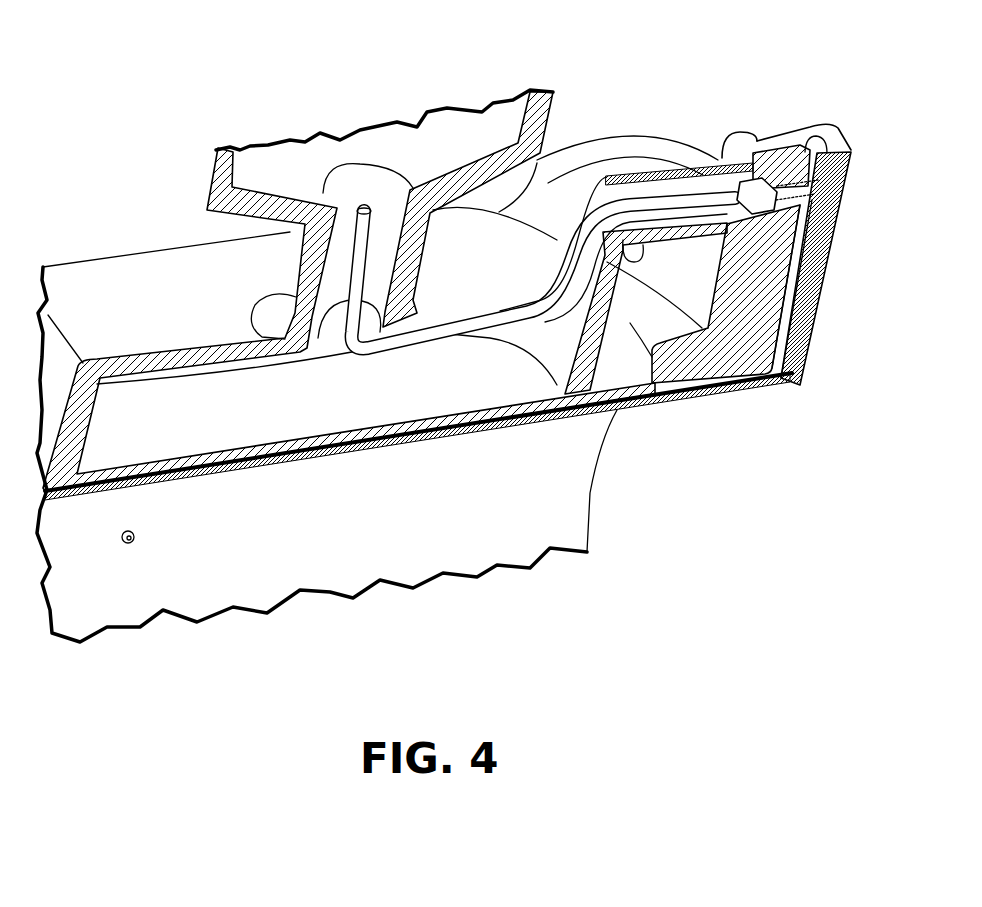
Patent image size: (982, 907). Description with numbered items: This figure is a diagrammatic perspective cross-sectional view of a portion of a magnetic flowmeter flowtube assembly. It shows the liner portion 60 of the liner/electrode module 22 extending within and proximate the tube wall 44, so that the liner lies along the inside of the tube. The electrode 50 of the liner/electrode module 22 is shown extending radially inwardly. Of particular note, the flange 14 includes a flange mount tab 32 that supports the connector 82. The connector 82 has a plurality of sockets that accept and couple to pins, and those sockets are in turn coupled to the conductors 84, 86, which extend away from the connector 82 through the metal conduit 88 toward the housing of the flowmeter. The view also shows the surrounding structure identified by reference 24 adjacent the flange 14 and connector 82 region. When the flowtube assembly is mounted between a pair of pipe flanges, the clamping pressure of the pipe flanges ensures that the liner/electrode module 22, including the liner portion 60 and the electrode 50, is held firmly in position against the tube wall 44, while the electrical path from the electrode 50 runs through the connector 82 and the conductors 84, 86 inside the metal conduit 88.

The flange 14 is at (693, 140).
The liner/electrode module 22 is at (826, 217).
The cap 24 is at (827, 135).
The flange mount tab 32 is at (770, 130).
The tube wall 44 is at (47, 487).
The electrode 50 is at (130, 544).
The liner portion 60 is at (245, 455).
The connector 82 is at (817, 292).
The conductor 84 is at (678, 205).
The conductor 86 is at (762, 203).
The metal conduit 88 is at (713, 153).